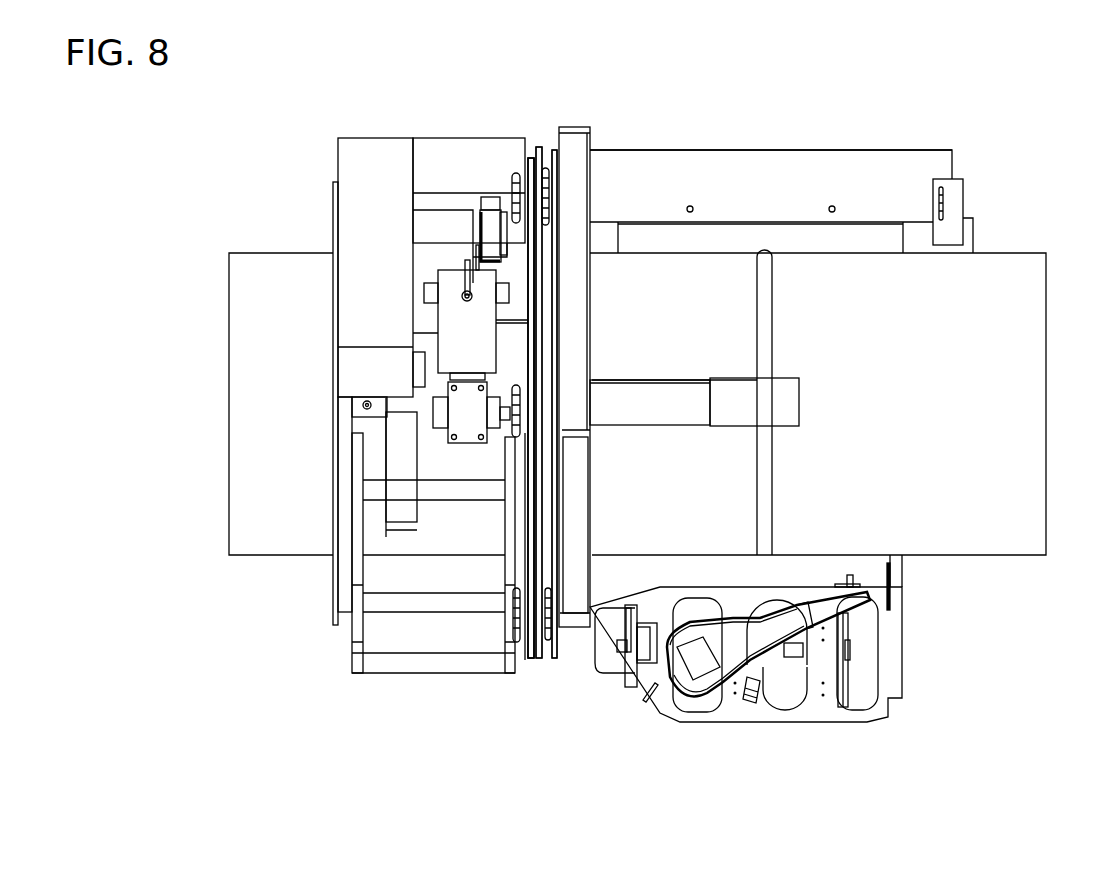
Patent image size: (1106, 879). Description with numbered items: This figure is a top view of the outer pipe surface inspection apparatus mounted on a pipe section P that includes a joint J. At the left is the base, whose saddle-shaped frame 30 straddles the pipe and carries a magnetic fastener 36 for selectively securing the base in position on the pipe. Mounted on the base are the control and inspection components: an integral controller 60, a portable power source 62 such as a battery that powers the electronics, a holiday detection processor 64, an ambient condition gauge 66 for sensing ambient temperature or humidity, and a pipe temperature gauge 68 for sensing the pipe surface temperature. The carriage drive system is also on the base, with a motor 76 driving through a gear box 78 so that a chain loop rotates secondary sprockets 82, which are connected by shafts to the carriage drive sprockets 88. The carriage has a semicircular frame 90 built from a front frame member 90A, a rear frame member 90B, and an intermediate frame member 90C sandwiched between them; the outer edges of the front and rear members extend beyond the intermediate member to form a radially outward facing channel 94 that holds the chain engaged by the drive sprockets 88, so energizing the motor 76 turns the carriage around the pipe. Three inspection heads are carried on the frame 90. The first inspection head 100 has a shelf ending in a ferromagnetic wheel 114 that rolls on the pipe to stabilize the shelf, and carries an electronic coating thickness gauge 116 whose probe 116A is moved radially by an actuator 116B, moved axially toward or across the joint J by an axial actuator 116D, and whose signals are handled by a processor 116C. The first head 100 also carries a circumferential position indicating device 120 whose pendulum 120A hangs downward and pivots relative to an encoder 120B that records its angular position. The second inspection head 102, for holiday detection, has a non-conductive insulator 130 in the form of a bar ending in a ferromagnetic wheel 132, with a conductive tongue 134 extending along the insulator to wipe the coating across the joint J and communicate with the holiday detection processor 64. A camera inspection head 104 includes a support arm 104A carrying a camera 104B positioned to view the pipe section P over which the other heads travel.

The frame 30 is at (327, 609).
The magnetic fastener 36 is at (372, 678).
The controller 60 is at (385, 447).
The portable power source 62 is at (445, 136).
The holiday detection processor 64 is at (333, 162).
The ambient condition gauge 66 is at (436, 205).
The pipe temperature gauge 68 is at (494, 195).
The motor 76 is at (438, 325).
The gear box 78 is at (468, 447).
The secondary sprockets 82 is at (515, 172).
The carriage drive sprockets 88 is at (549, 188).
The carriage frame 90 is at (530, 667).
The front frame member 90A is at (546, 660).
The rear frame member 90B is at (545, 583).
The intermediate frame member 90C is at (537, 668).
The channel 94 is at (531, 160).
The first inspection head 100 is at (922, 745).
The second inspection head 102 is at (868, 88).
The camera inspection head 104 is at (677, 340).
The support arm 104A is at (652, 405).
The camera 104B is at (795, 402).
The ferromagnetic wheel 114 is at (905, 580).
The electronic coating thickness gauge 116 is at (772, 743).
The probe 116A is at (850, 575).
The actuator 116B is at (860, 655).
The processor 116C is at (735, 703).
The axial actuator 116D is at (795, 687).
The circumferential position indicating device 120 is at (622, 688).
The pendulum 120A is at (598, 645).
The encoder 120B is at (640, 628).
The insulator 130 is at (802, 172).
The ferromagnetic wheel 132 is at (977, 230).
The conductive tongue 134 is at (731, 240).
The joint J is at (775, 312).
The pipe section P is at (1036, 253).